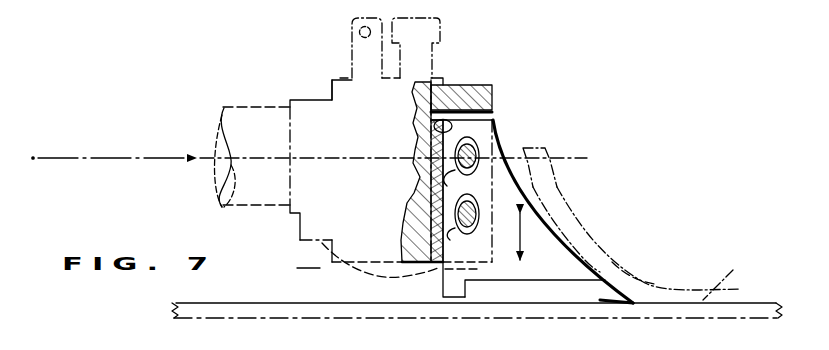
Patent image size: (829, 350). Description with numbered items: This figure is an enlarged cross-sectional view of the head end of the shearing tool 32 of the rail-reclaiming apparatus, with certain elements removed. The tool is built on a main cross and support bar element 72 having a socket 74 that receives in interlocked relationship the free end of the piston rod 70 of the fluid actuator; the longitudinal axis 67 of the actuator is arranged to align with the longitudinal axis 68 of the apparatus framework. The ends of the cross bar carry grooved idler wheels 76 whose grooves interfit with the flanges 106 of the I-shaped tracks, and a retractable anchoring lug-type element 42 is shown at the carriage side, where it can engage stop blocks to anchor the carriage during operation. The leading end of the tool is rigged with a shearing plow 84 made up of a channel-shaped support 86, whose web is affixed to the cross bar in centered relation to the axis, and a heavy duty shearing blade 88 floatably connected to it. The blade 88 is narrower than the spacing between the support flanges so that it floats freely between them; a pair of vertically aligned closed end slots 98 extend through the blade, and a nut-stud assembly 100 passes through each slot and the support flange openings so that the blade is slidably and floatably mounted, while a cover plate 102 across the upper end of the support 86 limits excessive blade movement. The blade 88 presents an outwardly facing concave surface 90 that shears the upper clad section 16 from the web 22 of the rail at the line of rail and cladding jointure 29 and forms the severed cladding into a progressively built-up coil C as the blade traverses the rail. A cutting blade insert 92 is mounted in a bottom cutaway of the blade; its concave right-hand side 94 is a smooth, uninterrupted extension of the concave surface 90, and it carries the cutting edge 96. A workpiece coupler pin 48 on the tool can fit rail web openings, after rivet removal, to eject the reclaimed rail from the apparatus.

The upper clad section 16 is at (666, 297).
The web 22 is at (698, 316).
The line of rail and cladding jointure 29 is at (740, 303).
The shearing tool 32 is at (555, 73).
The retractable anchoring lug-type element 42 is at (348, 32).
The workpiece coupler pin 48 is at (446, 25).
The longitudinal axis of the actuator 67 is at (70, 158).
The longitudinal axis of the framework 68 is at (320, 268).
The piston rod 70 is at (239, 115).
The main cross and support bar element 72 is at (358, 124).
The socket 74 is at (308, 117).
The grooved idler wheel 76 is at (388, 268).
The shearing plow 84 is at (542, 216).
The channel-shaped support 86 is at (434, 118).
The shearing blade 88 is at (553, 250).
The concave surface 90 is at (550, 158).
The cutting blade insert 92 is at (547, 295).
The concave right-hand side 94 is at (613, 290).
The cutting edge 96 is at (614, 302).
The closed end slots 98 is at (460, 224).
The nut-stud assembly 100 is at (478, 200).
The cover plate 102 is at (467, 85).
The flanges 106 is at (308, 288).
The coil C is at (566, 190).